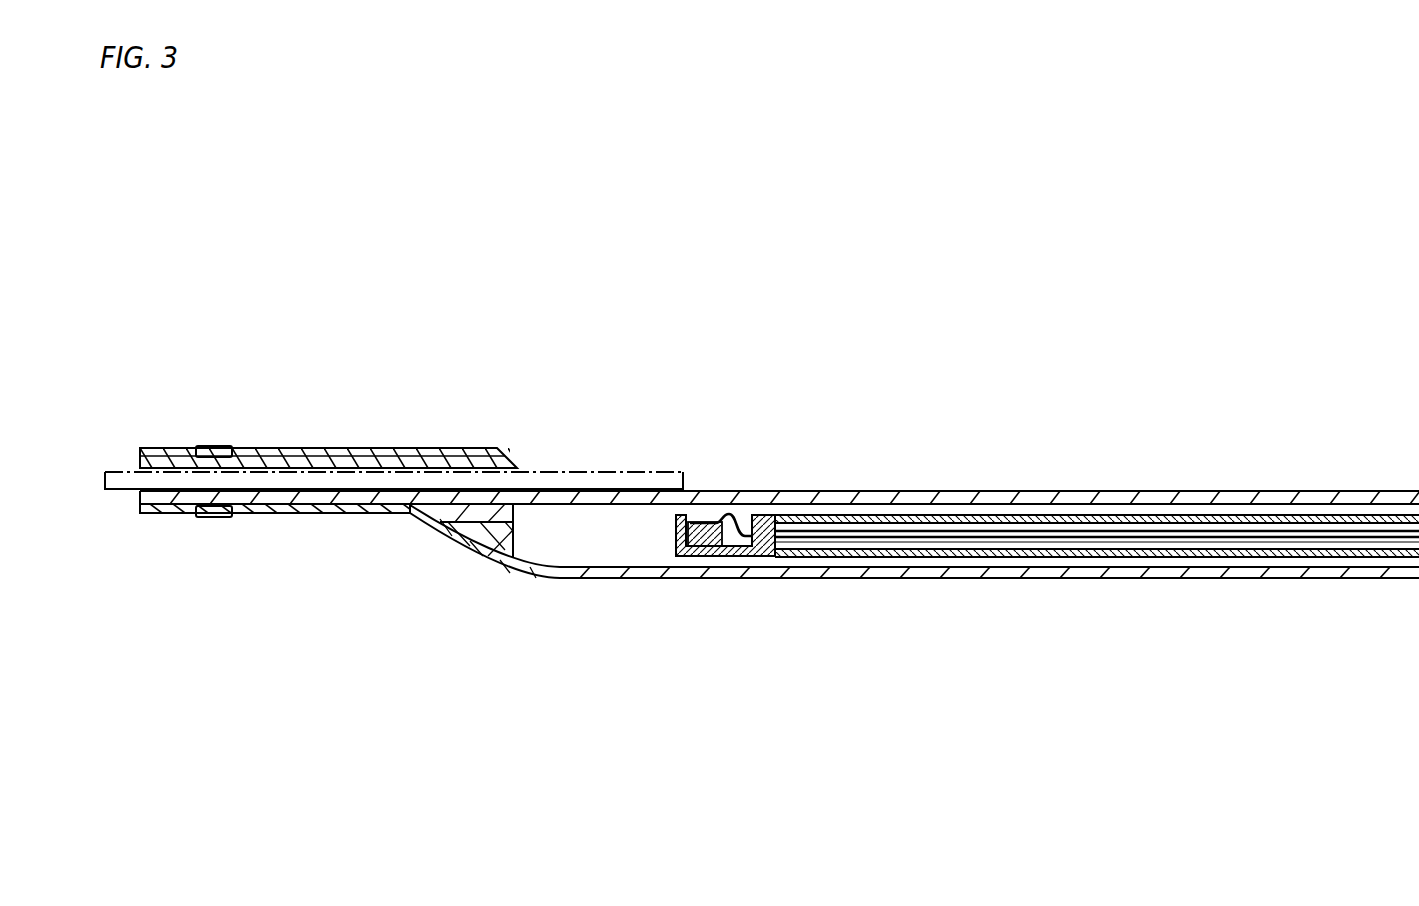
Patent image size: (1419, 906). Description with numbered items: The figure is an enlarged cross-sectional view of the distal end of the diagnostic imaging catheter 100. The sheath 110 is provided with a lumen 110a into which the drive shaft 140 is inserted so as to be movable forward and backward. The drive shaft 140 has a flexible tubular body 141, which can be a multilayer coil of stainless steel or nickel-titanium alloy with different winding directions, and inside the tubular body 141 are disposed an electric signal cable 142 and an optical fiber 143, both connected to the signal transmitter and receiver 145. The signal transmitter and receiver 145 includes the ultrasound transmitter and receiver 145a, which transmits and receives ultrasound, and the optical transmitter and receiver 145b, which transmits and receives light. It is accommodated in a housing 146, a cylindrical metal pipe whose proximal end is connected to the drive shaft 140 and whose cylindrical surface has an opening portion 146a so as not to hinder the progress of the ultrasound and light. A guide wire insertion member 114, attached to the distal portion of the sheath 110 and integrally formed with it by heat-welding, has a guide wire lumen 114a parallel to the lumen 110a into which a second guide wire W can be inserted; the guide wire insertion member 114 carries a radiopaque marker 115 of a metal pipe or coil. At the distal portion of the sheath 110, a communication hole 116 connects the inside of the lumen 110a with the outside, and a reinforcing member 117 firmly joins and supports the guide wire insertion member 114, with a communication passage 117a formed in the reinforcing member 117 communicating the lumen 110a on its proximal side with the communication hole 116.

The diagnostic imaging catheter 100 is at (228, 202).
The sheath 110 is at (1200, 500).
The lumen 110a is at (592, 556).
The guide wire insertion member 114 is at (356, 448).
The guide wire lumen 114a is at (437, 448).
The marker 115 is at (210, 447).
The communication hole 116 is at (427, 530).
The reinforcing member 117 is at (494, 553).
The communication passage 117a is at (472, 537).
The drive shaft 140 is at (1088, 728).
The flexible tubular body 141 is at (823, 559).
The electric signal cable 142 is at (950, 540).
The optical fiber 143 is at (1060, 525).
The signal transmitter and receiver 145 is at (757, 652).
The ultrasound transmitter and receiver 145a is at (700, 543).
The optical transmitter and receiver 145b is at (738, 538).
The housing 146 is at (758, 515).
The opening portion 146a is at (712, 515).
The second guide wire W is at (552, 472).